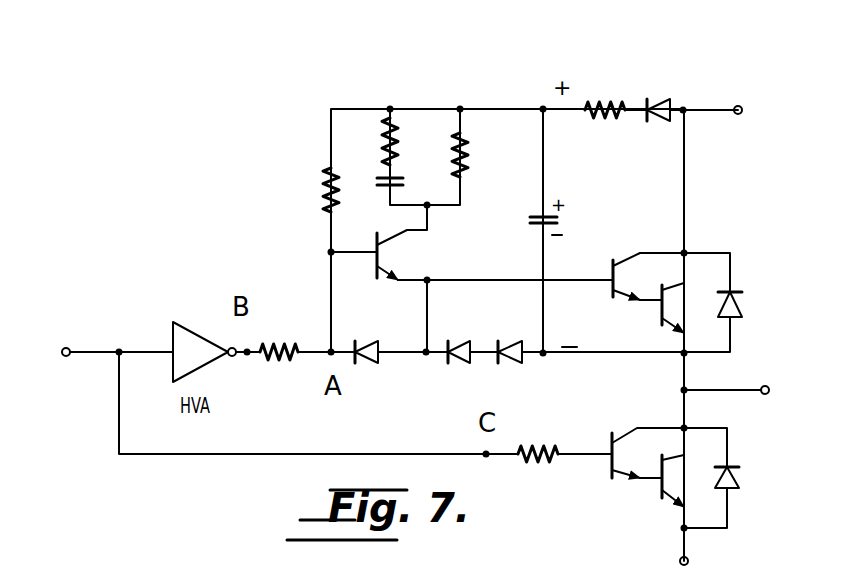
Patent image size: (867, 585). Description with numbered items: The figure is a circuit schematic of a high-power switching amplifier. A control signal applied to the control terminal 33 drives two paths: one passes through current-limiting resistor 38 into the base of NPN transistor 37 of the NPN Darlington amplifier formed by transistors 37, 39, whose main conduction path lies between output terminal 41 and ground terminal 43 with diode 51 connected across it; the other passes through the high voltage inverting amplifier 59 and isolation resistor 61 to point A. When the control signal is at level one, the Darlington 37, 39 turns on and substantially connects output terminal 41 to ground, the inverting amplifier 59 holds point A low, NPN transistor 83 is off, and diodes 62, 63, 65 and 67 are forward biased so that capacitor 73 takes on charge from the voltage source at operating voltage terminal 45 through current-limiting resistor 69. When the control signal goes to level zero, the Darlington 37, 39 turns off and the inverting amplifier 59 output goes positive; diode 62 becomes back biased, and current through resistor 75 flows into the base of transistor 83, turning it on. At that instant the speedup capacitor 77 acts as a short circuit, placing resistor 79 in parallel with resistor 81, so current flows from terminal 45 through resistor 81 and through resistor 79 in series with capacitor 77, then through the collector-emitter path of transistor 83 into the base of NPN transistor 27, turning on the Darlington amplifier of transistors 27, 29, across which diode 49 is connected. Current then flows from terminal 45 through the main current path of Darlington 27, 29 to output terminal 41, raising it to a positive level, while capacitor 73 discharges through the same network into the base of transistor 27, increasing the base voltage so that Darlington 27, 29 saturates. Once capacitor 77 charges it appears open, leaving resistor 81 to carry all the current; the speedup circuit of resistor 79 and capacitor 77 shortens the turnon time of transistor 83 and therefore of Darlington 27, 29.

The control terminal 33 is at (66, 346).
The high voltage inverting amplifier 59 is at (188, 321).
The isolation resistor 61 is at (278, 338).
The diode 62 is at (355, 340).
The diode 63 is at (450, 340).
The diode 65 is at (500, 340).
The resistor 75 is at (318, 192).
The resistor 79 is at (402, 133).
The speedup capacitor 77 is at (405, 178).
The resistor 81 is at (470, 150).
The NPN transistor 83 is at (395, 240).
The capacitor 73 is at (558, 213).
The current-limiting resistor 69 is at (598, 96).
The diode 67 is at (648, 98).
The operating voltage terminal 45 is at (740, 104).
The NPN transistor 27 is at (627, 254).
The transistor 29 is at (677, 292).
The diode 49 is at (745, 292).
The output terminal 41 is at (770, 390).
The current-limiting resistor 38 is at (536, 443).
The NPN transistor 37 is at (621, 436).
The transistor 39 is at (677, 462).
The diode 51 is at (741, 470).
The ground terminal 43 is at (690, 561).